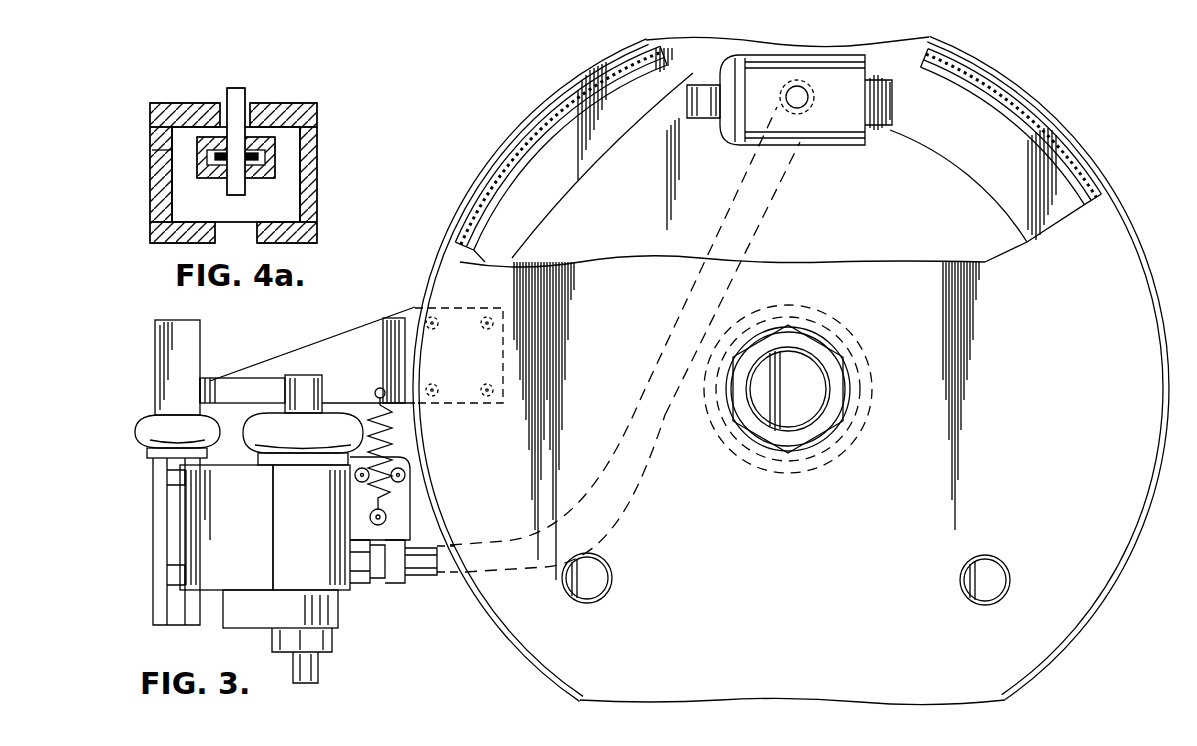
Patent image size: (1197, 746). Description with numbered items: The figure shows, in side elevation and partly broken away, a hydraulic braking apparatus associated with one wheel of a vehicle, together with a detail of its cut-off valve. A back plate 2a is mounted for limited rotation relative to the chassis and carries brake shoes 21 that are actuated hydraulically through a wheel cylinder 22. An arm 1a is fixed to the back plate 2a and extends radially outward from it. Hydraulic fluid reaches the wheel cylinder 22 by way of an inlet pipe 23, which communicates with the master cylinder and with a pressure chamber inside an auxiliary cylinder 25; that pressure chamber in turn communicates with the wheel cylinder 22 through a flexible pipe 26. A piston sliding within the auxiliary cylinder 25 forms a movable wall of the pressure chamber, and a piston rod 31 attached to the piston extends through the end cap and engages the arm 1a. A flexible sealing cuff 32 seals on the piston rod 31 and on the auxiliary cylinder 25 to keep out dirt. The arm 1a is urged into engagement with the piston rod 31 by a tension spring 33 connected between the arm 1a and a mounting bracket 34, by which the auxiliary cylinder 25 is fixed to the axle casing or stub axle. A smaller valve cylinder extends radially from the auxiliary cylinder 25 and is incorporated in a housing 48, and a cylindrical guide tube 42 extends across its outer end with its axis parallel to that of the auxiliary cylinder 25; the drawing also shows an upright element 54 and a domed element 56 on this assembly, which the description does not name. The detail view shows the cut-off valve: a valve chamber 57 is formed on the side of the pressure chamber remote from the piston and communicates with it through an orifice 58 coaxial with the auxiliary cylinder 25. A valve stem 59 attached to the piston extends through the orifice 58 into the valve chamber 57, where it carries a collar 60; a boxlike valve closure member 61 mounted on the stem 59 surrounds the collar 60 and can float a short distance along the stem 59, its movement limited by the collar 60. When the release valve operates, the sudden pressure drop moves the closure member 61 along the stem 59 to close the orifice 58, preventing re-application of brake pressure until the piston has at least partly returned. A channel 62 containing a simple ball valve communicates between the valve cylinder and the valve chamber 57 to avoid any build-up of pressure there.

In FIG. 3, the arm 1a is at (360, 343).
In FIG. 3, the back plate 2a is at (791, 370).
In FIG. 3, the brake shoes 21 is at (550, 153).
In FIG. 3, the wheel cylinder 22 is at (848, 80).
In FIG. 3, the inlet pipe 23 is at (313, 680).
In FIG. 3, the auxiliary cylinder 25 is at (307, 563).
In FIG. 3, the flexible pipe 26 is at (706, 274).
In FIG. 3, the piston rod 31 is at (303, 385).
In FIG. 3, the flexible sealing cuff 32 is at (268, 423).
In FIG. 3, the tension spring 33 is at (413, 433).
In FIG. 3, the mounting bracket 34 is at (397, 518).
In FIG. 3, the cylindrical guide tube 42 is at (167, 508).
In FIG. 3, the housing 48 is at (222, 533).
In FIG. 3, the actuating cylinder 54 is at (175, 368).
In FIG. 3, the cap 56 is at (158, 430).
In FIG. 4a, the valve chamber 57 is at (290, 180).
In FIG. 3, the valve chamber 57 is at (300, 618).
In FIG. 4a, the orifice 58 is at (258, 106).
In FIG. 4a, the valve stem 59 is at (237, 102).
In FIG. 4a, the collar 60 is at (240, 157).
In FIG. 4a, the boxlike valve closure member 61 is at (212, 140).
In FIG. 4a, the channel 62 is at (155, 152).